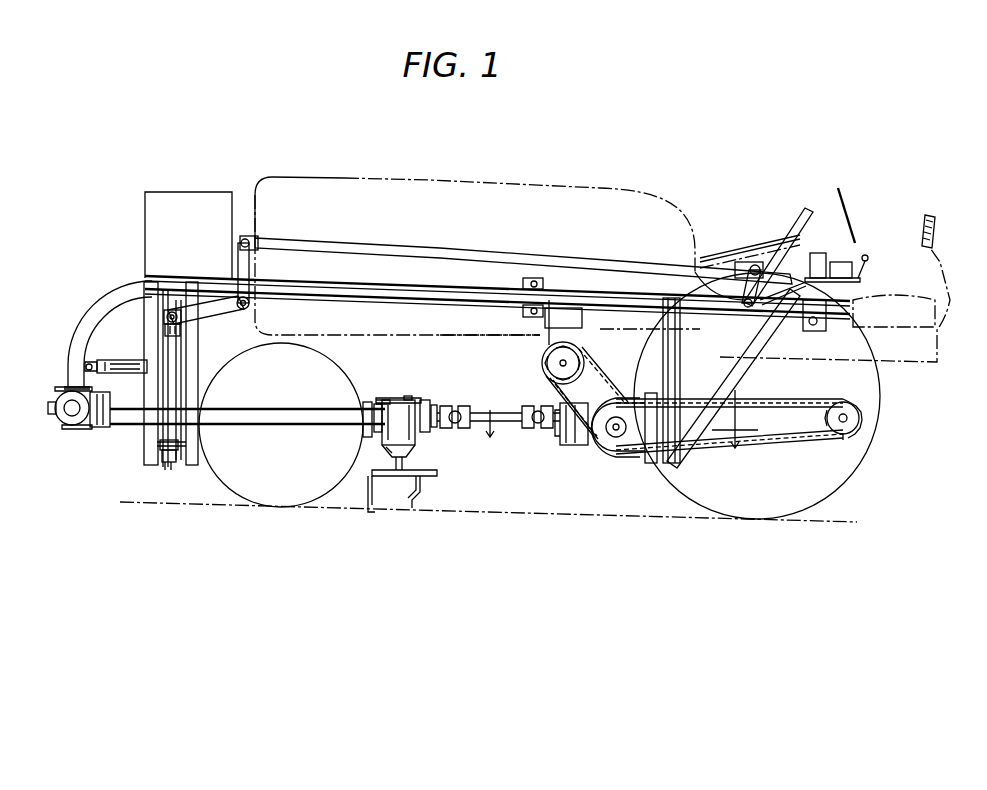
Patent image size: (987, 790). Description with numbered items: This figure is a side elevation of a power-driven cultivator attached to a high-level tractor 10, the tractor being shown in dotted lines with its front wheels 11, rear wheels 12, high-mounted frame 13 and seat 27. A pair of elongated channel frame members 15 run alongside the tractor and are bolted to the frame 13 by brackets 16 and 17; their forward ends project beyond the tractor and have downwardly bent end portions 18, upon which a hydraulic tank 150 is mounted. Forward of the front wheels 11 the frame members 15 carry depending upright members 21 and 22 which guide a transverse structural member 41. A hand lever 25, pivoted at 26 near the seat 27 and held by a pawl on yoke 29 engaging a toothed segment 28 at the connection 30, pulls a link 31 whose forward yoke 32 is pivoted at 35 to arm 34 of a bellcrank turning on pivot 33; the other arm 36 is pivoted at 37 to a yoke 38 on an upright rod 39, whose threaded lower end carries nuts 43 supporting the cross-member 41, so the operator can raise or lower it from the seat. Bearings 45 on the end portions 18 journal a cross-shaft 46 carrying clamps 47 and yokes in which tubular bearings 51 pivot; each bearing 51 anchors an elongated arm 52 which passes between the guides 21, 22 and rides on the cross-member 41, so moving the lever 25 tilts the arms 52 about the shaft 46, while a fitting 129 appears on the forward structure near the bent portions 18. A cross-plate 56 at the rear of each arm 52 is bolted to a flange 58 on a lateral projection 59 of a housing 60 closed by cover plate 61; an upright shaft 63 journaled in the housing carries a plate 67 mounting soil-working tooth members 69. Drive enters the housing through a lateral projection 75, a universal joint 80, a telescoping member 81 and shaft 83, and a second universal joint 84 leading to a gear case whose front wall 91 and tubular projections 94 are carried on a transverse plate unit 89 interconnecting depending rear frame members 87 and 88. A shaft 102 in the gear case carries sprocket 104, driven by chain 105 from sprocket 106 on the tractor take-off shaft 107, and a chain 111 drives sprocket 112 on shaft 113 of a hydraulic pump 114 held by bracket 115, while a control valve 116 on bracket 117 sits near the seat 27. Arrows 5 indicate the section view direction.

The section line 5 is at (620, 431).
The tractor 10 is at (468, 179).
The front wheels 11 is at (287, 507).
The rear wheels 12 is at (768, 512).
The frame 13 is at (470, 335).
The frame members 15 is at (398, 295).
The bracket 16 is at (523, 283).
The bracket 17 is at (825, 330).
The downwardly bent end portions 18 is at (80, 328).
The upright rigid structural member 21 is at (160, 445).
The upright rigid structural member 22 is at (198, 350).
The hand lever 25 is at (806, 208).
The pivot 26 is at (746, 308).
The seat 27 is at (900, 298).
The toothed segment 28 is at (722, 262).
The yoke 29 is at (742, 250).
The pivot block 30 is at (760, 262).
The link 31 is at (590, 260).
The yoke 32 is at (260, 243).
The pivot 33 is at (252, 317).
The arm 34 is at (250, 263).
The pivot 35 is at (256, 218).
The arm 36 is at (214, 312).
The pivot 37 is at (164, 316).
The yoke 38 is at (165, 330).
The rod 39 is at (168, 471).
The transverse structural member 41 is at (162, 456).
The nuts 43 is at (190, 444).
The bearings 45 is at (57, 389).
The cross-shaft 46 is at (70, 425).
The clamps 47 is at (52, 414).
The tubular bearing 51 is at (100, 427).
The arm 52 is at (278, 414).
The cross-plate 56 is at (358, 432).
The flange 58 is at (370, 402).
The lateral projection 59 is at (385, 399).
The housing member 60 is at (412, 450).
The cover plate 61 is at (409, 396).
The shaft 63 is at (384, 448).
The plate 67 is at (437, 474).
The tooth members 69 is at (402, 503).
The lateral projection 75 is at (427, 399).
The universal joint 80 is at (449, 406).
The elongated rigid member 81 is at (484, 422).
The shaft 83 is at (527, 428).
The universal joint 84 is at (546, 428).
The frame member 87 is at (681, 358).
The frame member 88 is at (742, 377).
The transverse plate unit 89 is at (650, 464).
The front wall unit 91 is at (577, 445).
The tubular forward projections 94 is at (560, 445).
The shaft 102 is at (610, 450).
The sprocket 104 is at (618, 440).
The drive chain 105 is at (768, 441).
The sprocket 106 is at (838, 436).
The drive take-off shaft 107 is at (848, 417).
The chain 111 is at (565, 396).
The sprocket 112 is at (548, 371).
The shaft 113 is at (544, 352).
The pump 114 is at (590, 346).
The bracket 115 is at (583, 324).
The control valve 116 is at (850, 265).
The bracket 117 is at (833, 285).
The cylinder 129 is at (112, 358).
The tank 150 is at (183, 193).